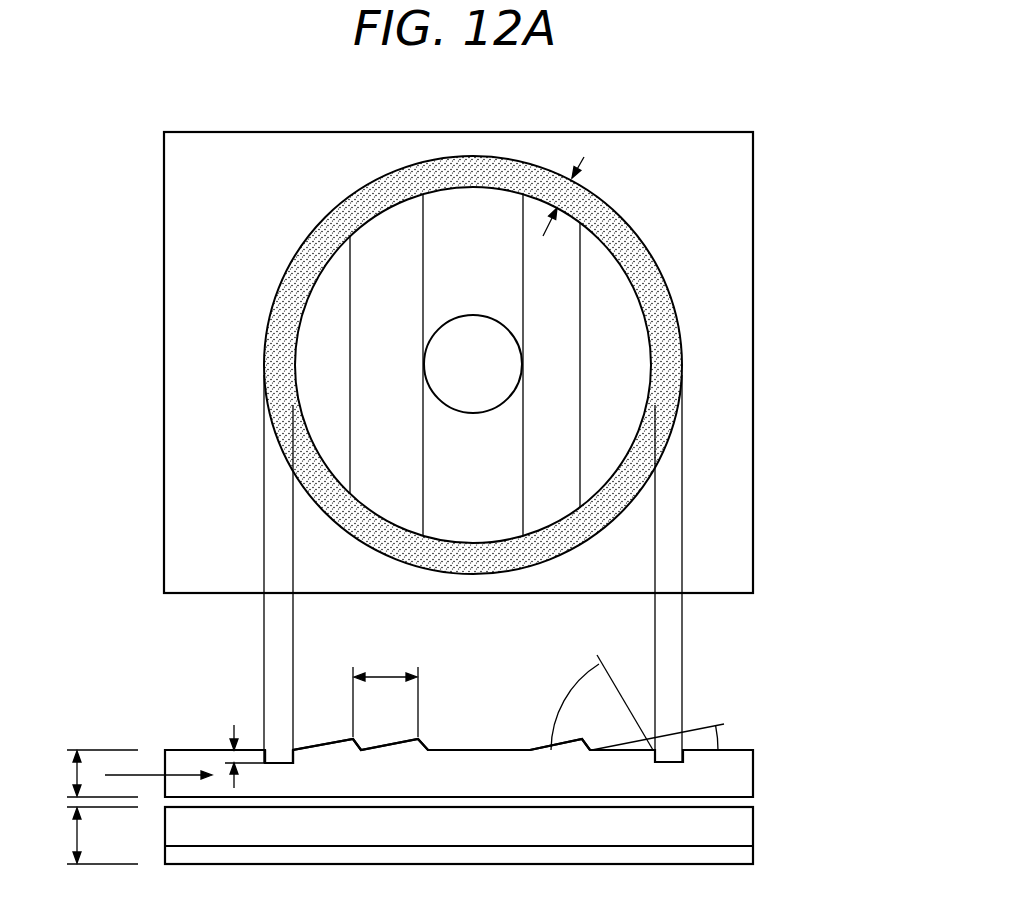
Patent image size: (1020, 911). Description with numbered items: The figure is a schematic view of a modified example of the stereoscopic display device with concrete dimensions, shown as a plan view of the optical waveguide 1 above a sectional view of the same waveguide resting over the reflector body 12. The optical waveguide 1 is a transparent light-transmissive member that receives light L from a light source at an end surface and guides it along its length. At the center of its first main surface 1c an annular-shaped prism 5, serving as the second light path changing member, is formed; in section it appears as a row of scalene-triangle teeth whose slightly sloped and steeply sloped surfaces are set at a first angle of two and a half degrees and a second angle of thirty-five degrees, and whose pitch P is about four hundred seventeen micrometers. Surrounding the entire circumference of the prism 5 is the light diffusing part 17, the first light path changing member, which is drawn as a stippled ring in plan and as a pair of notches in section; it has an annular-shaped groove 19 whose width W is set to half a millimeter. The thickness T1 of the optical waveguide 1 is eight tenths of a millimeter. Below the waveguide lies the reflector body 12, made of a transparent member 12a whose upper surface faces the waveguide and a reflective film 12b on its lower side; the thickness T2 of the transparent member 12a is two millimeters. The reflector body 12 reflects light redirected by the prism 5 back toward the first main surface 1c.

The optical waveguide 1 is at (762, 341).
The first main surface 1c is at (728, 435).
The prism 5 is at (623, 297).
The light diffusing part 17 is at (390, 185).
The annular-shaped groove 19 is at (281, 761).
The reflector body 12 is at (862, 805).
The transparent member 12a is at (746, 823).
The reflective film 12b is at (746, 856).
The width of the groove W is at (560, 207).
The light L is at (156, 775).
The pitch P is at (385, 692).
The thickness of the optical waveguide T1 is at (90, 773).
The thickness of the transparent member T2 is at (90, 835).